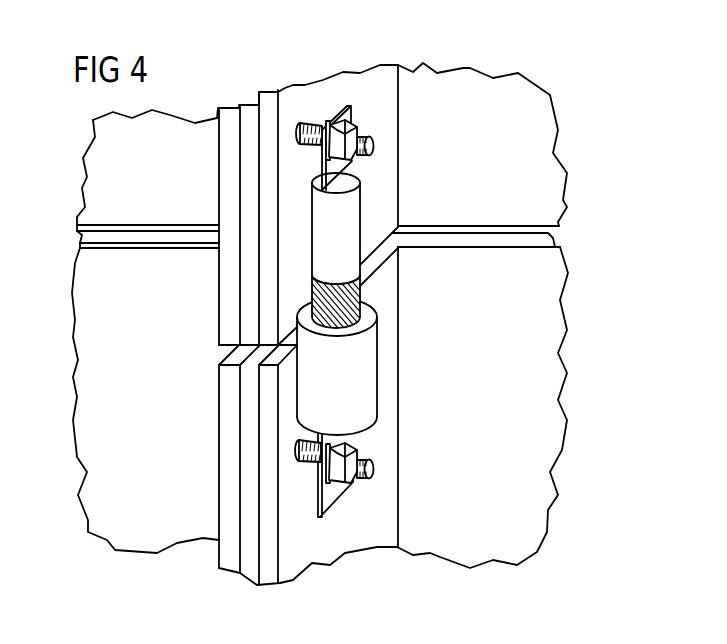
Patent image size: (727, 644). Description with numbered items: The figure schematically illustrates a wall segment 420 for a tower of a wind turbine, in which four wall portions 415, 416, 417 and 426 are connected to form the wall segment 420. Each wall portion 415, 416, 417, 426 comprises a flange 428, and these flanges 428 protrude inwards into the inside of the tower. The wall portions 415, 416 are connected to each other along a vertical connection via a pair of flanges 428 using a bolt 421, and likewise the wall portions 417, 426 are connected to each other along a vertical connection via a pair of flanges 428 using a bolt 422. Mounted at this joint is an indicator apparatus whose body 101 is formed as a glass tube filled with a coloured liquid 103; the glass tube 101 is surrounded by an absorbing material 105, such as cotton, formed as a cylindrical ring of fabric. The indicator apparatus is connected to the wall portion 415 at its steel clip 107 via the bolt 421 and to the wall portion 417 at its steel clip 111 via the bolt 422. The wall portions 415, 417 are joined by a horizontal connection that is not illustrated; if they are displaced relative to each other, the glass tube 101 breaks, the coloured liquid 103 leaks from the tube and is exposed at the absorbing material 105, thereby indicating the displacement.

The body 101 is at (350, 209).
The coloured liquid 103 is at (360, 295).
The absorbing material 105 is at (368, 378).
The steel clip 107 is at (352, 118).
The steel clip 111 is at (334, 497).
The wall portion 415 is at (537, 196).
The wall portion 416 is at (137, 194).
The wall portion 417 is at (537, 294).
The wall segment 420 is at (471, 161).
The bolt 421 is at (365, 137).
The bolt 422 is at (346, 440).
The wall portion 426 is at (137, 294).
The flange 428 is at (267, 157).